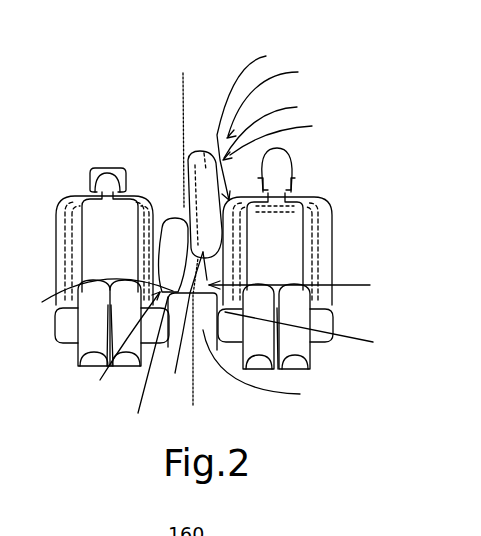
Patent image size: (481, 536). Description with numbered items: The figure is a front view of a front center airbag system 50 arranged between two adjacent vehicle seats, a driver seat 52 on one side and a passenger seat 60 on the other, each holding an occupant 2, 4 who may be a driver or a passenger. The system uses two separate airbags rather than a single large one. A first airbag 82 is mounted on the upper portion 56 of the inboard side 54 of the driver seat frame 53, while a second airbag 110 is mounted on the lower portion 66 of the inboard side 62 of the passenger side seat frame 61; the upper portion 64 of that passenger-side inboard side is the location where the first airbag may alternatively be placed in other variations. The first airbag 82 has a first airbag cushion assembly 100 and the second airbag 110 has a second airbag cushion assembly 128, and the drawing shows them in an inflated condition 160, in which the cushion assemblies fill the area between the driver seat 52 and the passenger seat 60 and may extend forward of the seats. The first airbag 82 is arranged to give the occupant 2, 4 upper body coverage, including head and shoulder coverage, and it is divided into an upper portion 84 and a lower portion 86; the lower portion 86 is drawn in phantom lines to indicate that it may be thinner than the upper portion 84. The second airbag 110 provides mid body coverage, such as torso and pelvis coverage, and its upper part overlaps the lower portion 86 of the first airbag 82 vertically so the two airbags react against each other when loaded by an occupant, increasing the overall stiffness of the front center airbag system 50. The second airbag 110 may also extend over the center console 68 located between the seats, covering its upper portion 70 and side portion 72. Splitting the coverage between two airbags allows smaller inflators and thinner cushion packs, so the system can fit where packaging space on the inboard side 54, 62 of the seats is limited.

The occupant 2 is at (281, 168).
The occupant 4 is at (107, 173).
The front center airbag system 50 is at (271, 128).
The driver seat 52 is at (325, 212).
The driver seat frame 53 is at (315, 262).
The inboard side 54 is at (301, 288).
The upper portion 56 is at (274, 100).
The passenger seat 60 is at (58, 205).
The passenger side seat frame 61 is at (68, 244).
The inboard side 62 is at (167, 216).
The upper portion 64 is at (182, 130).
The lower portion 66 is at (96, 298).
The center console 68 is at (264, 368).
The upper portion 70 is at (189, 323).
The side portion 72 is at (260, 366).
The first airbag 82 is at (195, 166).
The upper portion 84 is at (253, 122).
The lower portion 86 is at (197, 339).
The first airbag cushion assembly 100 is at (222, 134).
The second airbag 110 is at (101, 360).
The second airbag cushion assembly 128 is at (101, 360).
The inflated condition 160 is at (289, 135).